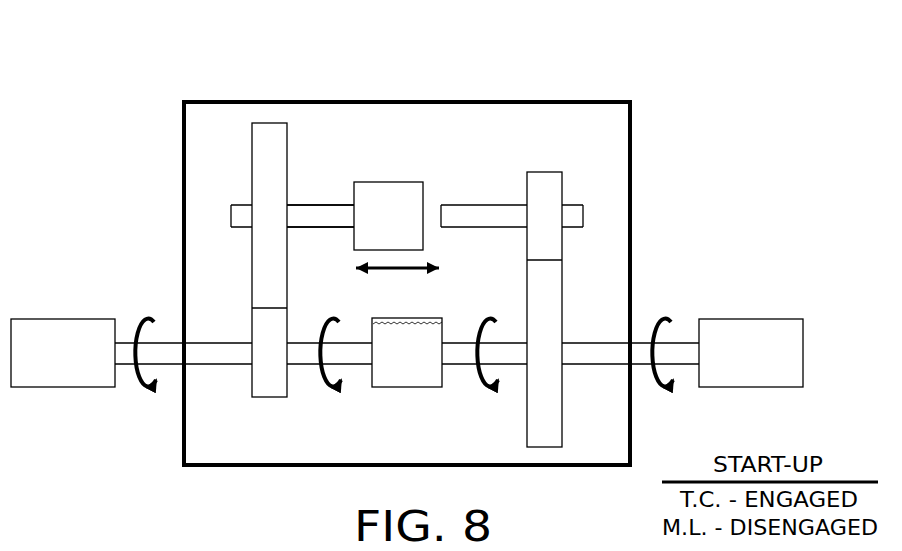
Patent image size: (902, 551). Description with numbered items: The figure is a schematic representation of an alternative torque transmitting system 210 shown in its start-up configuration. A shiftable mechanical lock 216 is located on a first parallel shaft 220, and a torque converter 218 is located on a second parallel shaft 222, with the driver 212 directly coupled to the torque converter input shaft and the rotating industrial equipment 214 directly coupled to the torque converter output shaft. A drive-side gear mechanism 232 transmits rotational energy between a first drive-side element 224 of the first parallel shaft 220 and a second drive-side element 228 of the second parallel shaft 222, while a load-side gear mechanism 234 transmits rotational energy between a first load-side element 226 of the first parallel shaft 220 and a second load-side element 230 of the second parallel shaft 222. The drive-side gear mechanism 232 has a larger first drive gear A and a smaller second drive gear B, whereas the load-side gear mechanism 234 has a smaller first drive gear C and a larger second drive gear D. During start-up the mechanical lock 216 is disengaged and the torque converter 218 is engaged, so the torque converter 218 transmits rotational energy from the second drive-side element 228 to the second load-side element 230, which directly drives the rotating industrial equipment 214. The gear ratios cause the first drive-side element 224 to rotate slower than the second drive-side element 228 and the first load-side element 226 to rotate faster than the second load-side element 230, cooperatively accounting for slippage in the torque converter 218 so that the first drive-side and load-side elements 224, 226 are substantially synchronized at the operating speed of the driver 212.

The torque transmitting system 210 is at (613, 66).
The driver 212 is at (92, 319).
The rotating industrial equipment 214 is at (780, 319).
The shiftable mechanical lock 216 is at (398, 182).
The torque converter 218 is at (395, 388).
The first parallel shaft 220 is at (241, 203).
The second parallel shaft 222 is at (240, 367).
The first drive-side element 224 is at (321, 205).
The first load-side element 226 is at (472, 205).
The second drive-side element 228 is at (352, 365).
The second load-side element 230 is at (507, 365).
The drive-side gear mechanism 232 is at (268, 121).
The load-side gear mechanism 234 is at (544, 170).